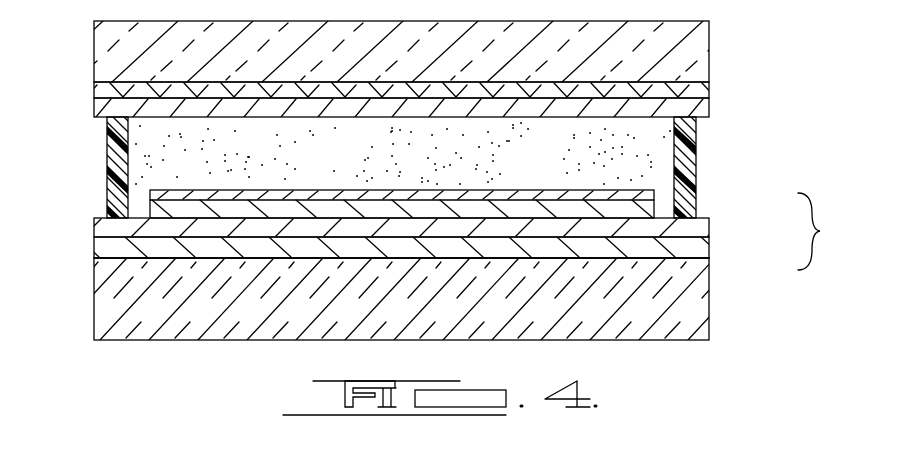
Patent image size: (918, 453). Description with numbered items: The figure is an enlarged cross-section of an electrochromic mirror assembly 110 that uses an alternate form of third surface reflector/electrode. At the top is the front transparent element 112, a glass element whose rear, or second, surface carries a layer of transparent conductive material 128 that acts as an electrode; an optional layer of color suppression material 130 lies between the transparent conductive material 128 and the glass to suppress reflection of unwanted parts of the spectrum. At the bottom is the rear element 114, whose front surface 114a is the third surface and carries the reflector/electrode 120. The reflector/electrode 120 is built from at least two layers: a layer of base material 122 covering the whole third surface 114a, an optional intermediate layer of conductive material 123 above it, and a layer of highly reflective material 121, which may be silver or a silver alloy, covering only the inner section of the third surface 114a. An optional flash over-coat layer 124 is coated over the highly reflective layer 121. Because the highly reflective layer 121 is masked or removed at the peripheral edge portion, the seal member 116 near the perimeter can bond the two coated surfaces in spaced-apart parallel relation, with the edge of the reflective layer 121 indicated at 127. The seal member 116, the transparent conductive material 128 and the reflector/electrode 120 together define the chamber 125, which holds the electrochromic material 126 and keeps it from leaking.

The mirror assembly 110 is at (735, 345).
The front transparent element 112 is at (704, 48).
The rear element 114 is at (133, 322).
The front surface of the rear element 114a is at (97, 259).
The seal member 116 is at (110, 179).
The reflector/electrode 120 is at (841, 231).
The layer of highly reflective material 121 is at (634, 210).
The layer of base material 122 is at (693, 250).
The intermediate layer of conductive material 123 is at (700, 230).
The flash over-coat layer 124 is at (523, 190).
The chamber 125 is at (359, 164).
The electrochromic material 126 is at (650, 150).
The edge of electrode layer 127 is at (131, 212).
The transparent conductive material 128 is at (703, 111).
The color suppression material 130 is at (100, 91).